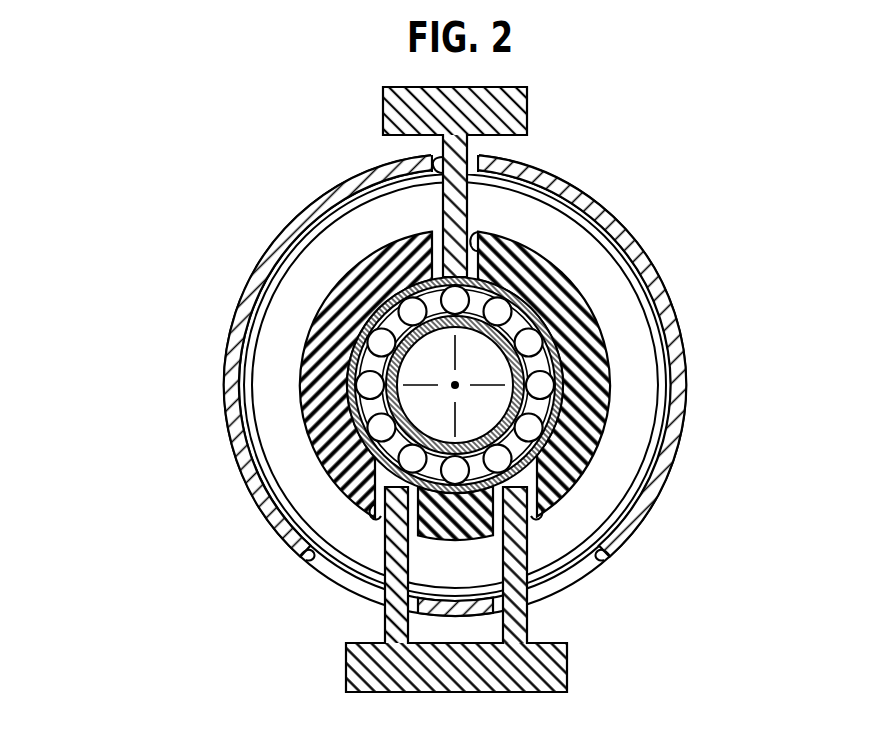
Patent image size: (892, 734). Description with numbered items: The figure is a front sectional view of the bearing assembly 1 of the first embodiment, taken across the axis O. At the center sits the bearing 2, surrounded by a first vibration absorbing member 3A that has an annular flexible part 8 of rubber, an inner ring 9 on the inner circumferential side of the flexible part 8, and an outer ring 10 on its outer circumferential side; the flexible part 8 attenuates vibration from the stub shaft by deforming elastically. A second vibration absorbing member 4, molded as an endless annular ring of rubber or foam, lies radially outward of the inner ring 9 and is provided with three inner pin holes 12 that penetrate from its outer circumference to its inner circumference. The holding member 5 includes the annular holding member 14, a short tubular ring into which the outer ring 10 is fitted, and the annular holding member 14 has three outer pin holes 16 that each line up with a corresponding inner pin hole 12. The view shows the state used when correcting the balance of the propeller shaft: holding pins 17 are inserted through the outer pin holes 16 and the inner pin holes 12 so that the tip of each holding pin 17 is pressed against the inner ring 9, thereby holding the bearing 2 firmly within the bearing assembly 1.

The bearing assembly 1 is at (193, 174).
The bearing 2 is at (349, 380).
The first vibration absorbing member 3A is at (277, 214).
The second vibration absorbing member 4 is at (322, 459).
The holding member 5 is at (266, 270).
The flexible part 8 is at (284, 460).
The inner ring 9 is at (371, 385).
The outer ring 10 is at (251, 356).
The inner pin hole 12 is at (477, 232).
The annular holding member 14 is at (455, 385).
The outer pin hole 16 is at (438, 156).
The holding pin 17 is at (459, 207).
The axis O is at (457, 384).